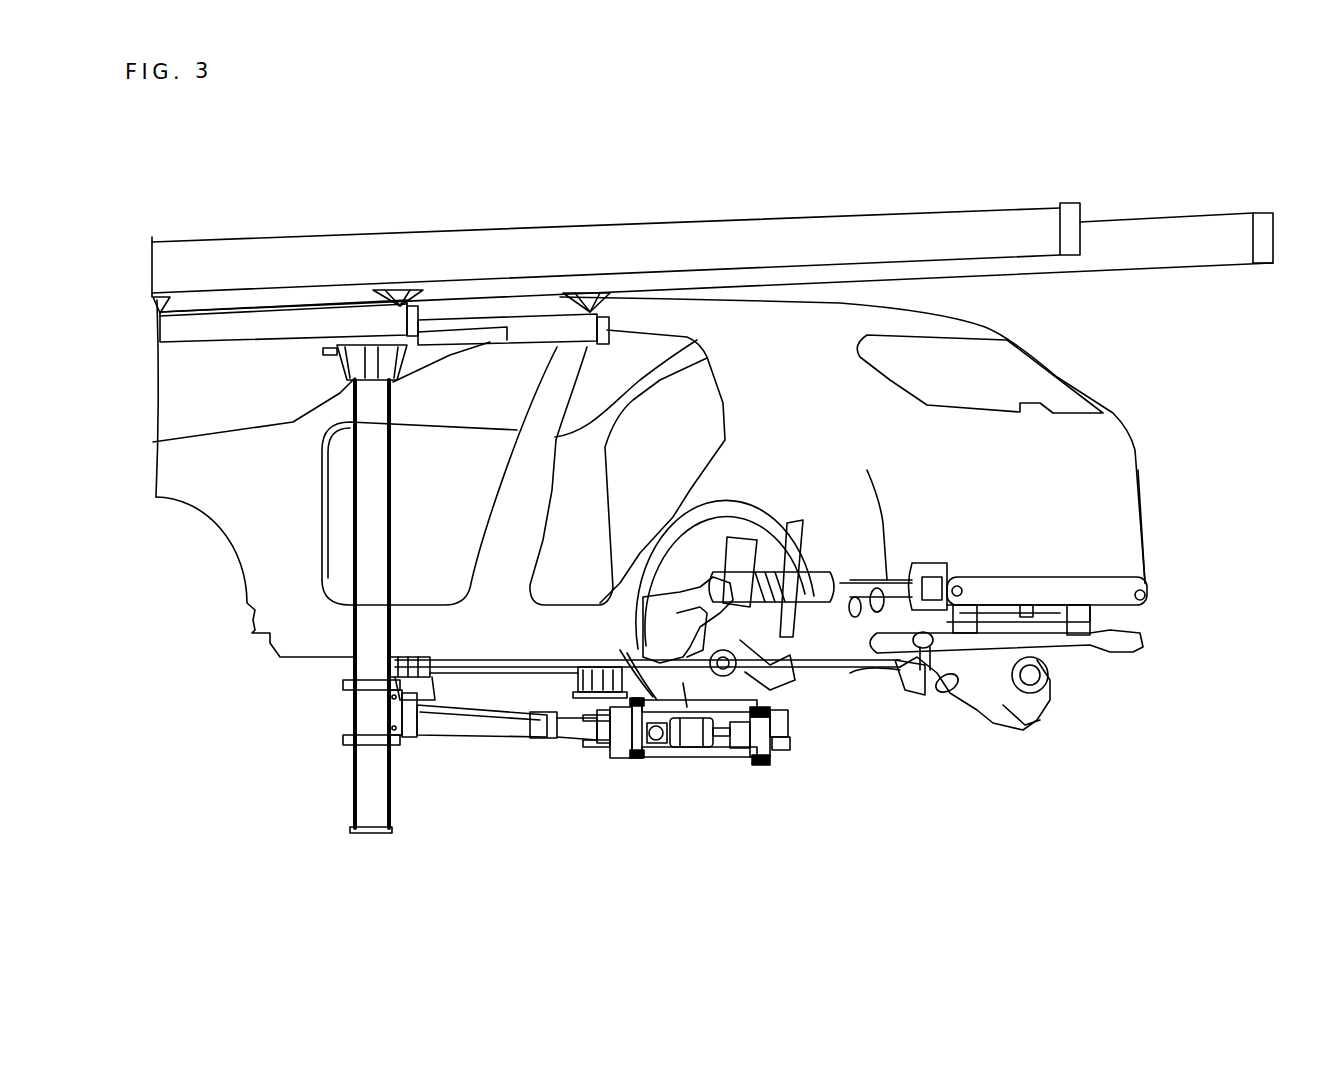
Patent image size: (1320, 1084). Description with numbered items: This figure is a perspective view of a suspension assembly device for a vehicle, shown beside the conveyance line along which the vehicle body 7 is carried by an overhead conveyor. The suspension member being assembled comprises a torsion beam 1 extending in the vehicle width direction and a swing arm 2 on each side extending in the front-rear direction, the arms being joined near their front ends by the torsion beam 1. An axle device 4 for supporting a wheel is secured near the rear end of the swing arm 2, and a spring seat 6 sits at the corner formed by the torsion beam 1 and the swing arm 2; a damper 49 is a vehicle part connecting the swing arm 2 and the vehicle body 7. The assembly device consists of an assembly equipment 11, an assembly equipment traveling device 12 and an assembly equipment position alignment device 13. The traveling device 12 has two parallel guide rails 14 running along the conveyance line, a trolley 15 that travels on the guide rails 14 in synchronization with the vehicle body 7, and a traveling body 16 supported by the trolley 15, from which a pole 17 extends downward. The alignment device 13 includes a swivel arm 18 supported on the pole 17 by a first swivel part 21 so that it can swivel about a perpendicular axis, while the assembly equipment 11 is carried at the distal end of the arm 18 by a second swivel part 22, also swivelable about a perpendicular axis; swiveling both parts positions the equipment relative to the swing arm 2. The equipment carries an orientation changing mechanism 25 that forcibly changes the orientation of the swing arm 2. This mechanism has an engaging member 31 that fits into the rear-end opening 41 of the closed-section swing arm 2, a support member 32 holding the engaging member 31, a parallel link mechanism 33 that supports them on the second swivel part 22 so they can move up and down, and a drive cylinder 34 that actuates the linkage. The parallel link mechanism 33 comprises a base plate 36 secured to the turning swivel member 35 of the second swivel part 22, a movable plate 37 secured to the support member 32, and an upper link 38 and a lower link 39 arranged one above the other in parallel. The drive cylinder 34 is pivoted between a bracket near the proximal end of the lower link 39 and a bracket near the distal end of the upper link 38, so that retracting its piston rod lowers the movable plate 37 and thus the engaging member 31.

The torsion beam 1 is at (840, 583).
The swing arm 2 is at (727, 638).
The axle device 4 is at (685, 620).
The spring seat 6 is at (930, 692).
The vehicle body 7 is at (1123, 450).
The assembly equipment 11 is at (708, 779).
The assembly equipment traveling device 12 is at (312, 236).
The assembly equipment position alignment device 13 is at (462, 736).
The guide rails 14 is at (1027, 222).
The trolley 15 is at (397, 298).
The traveling body 16 is at (227, 310).
The pole 17 is at (373, 508).
The swivel arm 18 is at (497, 718).
The first swivel part 21 is at (413, 745).
The second swivel part 22 is at (585, 693).
The orientation changing mechanism 25 is at (812, 828).
The engaging member 31 is at (783, 706).
The support member 32 is at (791, 770).
The parallel link mechanism 33 is at (678, 763).
The drive cylinder 34 is at (690, 733).
The turning swivel member 35 is at (605, 753).
The base plate 36 is at (613, 770).
The movable plate 37 is at (755, 740).
The upper link 38 is at (650, 695).
The lower link 39 is at (655, 755).
The rear-end opening 41 is at (1033, 717).
The damper 49 is at (797, 530).